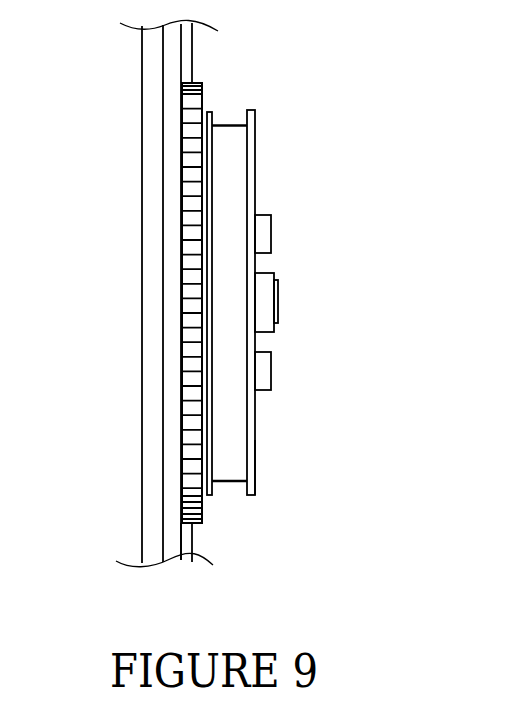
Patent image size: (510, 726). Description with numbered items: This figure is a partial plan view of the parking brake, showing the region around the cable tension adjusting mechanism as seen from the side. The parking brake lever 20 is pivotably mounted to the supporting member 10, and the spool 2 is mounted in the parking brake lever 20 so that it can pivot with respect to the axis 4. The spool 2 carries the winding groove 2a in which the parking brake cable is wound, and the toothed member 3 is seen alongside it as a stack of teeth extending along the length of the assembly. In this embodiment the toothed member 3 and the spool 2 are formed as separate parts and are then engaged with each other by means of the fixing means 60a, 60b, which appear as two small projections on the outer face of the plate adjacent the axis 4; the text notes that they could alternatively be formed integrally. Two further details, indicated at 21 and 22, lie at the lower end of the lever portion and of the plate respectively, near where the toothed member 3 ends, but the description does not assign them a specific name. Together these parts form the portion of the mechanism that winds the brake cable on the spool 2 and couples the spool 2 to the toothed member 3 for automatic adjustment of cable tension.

The spool 2 is at (257, 170).
The winding groove 2a is at (229, 125).
The toothed member 3 is at (204, 83).
The axis 4 is at (278, 300).
The supporting member 10 is at (143, 315).
The parking brake lever 20 is at (167, 471).
The lower end of shaft 21 is at (203, 497).
The lower cross bar of holder 22 is at (252, 462).
The fixing means 60a is at (267, 368).
The fixing means 60b is at (267, 233).